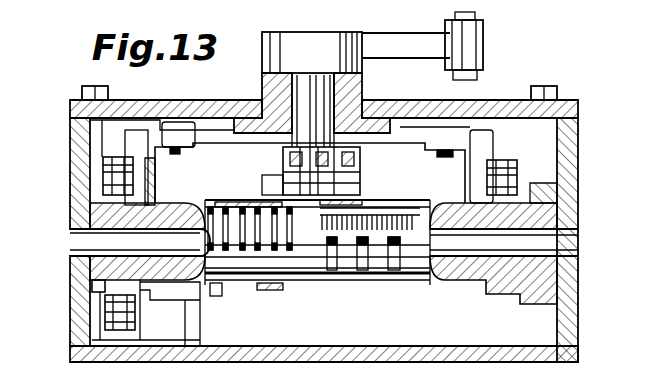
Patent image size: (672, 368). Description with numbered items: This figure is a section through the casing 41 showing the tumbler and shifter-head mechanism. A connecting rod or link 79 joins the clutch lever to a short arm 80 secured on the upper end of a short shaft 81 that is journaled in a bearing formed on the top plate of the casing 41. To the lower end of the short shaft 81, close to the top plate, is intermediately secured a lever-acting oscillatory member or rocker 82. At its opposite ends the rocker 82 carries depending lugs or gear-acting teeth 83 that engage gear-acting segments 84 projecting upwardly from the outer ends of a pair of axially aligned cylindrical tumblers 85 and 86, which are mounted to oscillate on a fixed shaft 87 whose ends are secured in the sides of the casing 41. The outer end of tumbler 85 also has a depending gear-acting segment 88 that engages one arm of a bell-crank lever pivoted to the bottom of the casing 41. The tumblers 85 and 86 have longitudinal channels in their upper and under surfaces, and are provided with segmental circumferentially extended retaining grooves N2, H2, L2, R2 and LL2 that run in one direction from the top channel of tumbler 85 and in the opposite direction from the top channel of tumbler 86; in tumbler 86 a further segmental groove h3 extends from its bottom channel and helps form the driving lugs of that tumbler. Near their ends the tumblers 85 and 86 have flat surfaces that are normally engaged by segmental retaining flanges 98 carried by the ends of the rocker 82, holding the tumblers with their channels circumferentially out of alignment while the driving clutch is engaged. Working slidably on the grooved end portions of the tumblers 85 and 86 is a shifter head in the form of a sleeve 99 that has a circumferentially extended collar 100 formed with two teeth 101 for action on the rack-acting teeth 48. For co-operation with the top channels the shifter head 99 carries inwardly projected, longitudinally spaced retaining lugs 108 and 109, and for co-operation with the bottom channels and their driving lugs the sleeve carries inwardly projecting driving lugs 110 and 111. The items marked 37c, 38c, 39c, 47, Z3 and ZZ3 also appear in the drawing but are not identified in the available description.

The casing 41 is at (566, 170).
The connecting rod or link 79 is at (483, 27).
The short arm 80 is at (403, 46).
The short shaft 81 is at (317, 97).
The rocker 82 is at (190, 138).
The depending lugs or gear-acting teeth 83 is at (115, 165).
The gear-acting segments 84 is at (110, 185).
The tumbler 85 is at (168, 272).
The tumbler 86 is at (440, 272).
The fixed shaft 87 is at (555, 240).
The depending gear-acting segment 88 is at (100, 287).
The segmental retaining flanges 98 is at (153, 176).
The shifter head 99 is at (243, 255).
The collar 100 is at (278, 290).
The teeth 101 is at (280, 183).
The retaining lug 108 is at (210, 202).
The retaining lug 109 is at (330, 198).
The driving lug 110 is at (205, 296).
The driving lug 111 is at (333, 250).
The bore 37c is at (287, 158).
The rod 38c is at (322, 180).
The lip 39c is at (358, 135).
The box 47 is at (290, 166).
The rack-acting teeth 48 is at (335, 178).
The retaining groove N2 is at (210, 250).
The retaining groove H2 is at (225, 255).
The retaining groove L2 is at (257, 255).
The retaining groove R2 is at (275, 255).
The retaining groove LL2 is at (290, 258).
The segmental groove h3 is at (362, 250).
The slot Z3 is at (393, 250).
The teeth ZZ3 is at (432, 265).